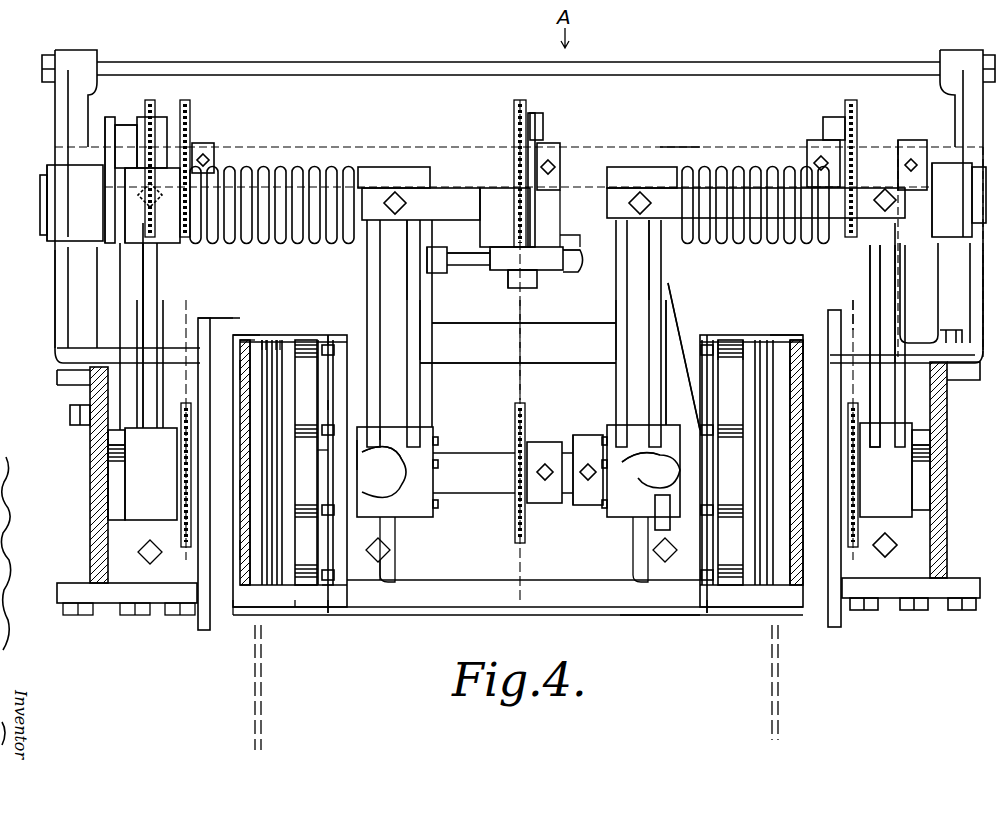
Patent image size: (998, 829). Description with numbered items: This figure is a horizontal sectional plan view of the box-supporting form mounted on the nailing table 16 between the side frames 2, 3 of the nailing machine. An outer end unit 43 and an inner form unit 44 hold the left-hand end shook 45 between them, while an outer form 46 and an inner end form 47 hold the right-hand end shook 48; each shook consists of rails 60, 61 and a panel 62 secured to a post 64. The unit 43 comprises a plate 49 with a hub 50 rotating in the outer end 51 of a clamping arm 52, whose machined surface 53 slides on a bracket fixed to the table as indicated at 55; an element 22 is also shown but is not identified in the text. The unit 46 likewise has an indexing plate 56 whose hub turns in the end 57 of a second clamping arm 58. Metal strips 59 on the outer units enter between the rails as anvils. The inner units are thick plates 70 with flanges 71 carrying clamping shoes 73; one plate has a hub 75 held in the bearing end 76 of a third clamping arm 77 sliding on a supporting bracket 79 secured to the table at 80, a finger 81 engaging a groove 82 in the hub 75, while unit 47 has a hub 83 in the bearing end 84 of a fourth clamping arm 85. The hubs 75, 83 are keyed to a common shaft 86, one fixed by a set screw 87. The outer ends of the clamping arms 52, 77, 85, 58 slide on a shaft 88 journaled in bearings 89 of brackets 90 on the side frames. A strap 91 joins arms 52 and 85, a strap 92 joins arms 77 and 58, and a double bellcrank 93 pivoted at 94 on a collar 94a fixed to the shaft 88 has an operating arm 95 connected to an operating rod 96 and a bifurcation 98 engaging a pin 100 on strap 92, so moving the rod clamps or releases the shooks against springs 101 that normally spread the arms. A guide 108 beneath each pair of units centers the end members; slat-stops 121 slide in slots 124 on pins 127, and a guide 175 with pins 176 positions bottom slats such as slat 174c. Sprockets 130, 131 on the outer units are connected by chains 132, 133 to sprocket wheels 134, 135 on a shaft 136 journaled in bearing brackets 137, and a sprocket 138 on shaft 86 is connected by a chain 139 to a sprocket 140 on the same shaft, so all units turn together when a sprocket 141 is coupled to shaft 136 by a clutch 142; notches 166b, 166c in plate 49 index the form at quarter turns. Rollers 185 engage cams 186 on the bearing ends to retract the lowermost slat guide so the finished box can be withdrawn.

The side frame 2 is at (945, 425).
The side frame 3 is at (90, 525).
The nailing table 16 is at (483, 578).
The base plate 22 is at (112, 603).
The outer end unit 43 is at (222, 332).
The inner form unit 44 is at (332, 330).
The left-hand end shook 45 is at (248, 336).
The outer form 46 is at (814, 335).
The inner end form 47 is at (732, 335).
The right-hand end shook 48 is at (795, 335).
The plate 49 is at (204, 630).
The hub 50 is at (178, 452).
The outer end of clamping arm 51 is at (140, 525).
The clamping arm 52 is at (160, 296).
The machined surface 53 is at (108, 455).
The mounting of bracket on table 55 is at (140, 605).
The indexing plate 56 is at (836, 628).
The end of second clamping arm 57 is at (895, 512).
The second clamping arm 58 is at (885, 300).
The metal strips 59 is at (238, 396).
The end rail 60 is at (266, 320).
The end rail 61 is at (240, 615).
The panel 62 is at (244, 472).
The second post 64 is at (290, 330).
The plate 70 is at (305, 610).
The flange 71 is at (335, 605).
The clamping shoe 73 is at (285, 345).
The hub 75 is at (370, 435).
The bearing end 76 is at (430, 440).
The third clamping arm 77 is at (405, 318).
The supporting bracket 79 is at (422, 338).
The mounting of bracket on table 80 is at (378, 578).
The projecting finger 81 is at (340, 430).
The groove 82 is at (322, 455).
The hub 83 is at (662, 430).
The bearing end 84 is at (618, 522).
The fourth clamping arm 85 is at (664, 292).
The common shaft 86 is at (482, 493).
The set screw 87 is at (588, 460).
The shaft 88 is at (588, 225).
The bearings 89 is at (75, 243).
The brackets 90 is at (55, 292).
The strap 91 is at (265, 238).
The strap 92 is at (770, 218).
The double bellcrank 93 is at (575, 262).
The pivot 94 is at (535, 282).
The collar 94a is at (560, 245).
The operating arm 95 is at (462, 268).
The operating rod 96 is at (432, 273).
The bifurcation 98 is at (490, 275).
The pin 100 is at (515, 288).
The springs 101 is at (292, 168).
The guide 108 is at (264, 686).
The slat-stop 121 is at (405, 383).
The slot 124 is at (340, 605).
The pins 127 is at (405, 400).
The sprocket 130 is at (186, 545).
The sprocket 131 is at (853, 545).
The chain 132 is at (180, 285).
The chain 133 is at (852, 290).
The sprocket wheel 134 is at (192, 103).
The sprocket wheel 135 is at (858, 105).
The shaft 136 is at (667, 147).
The bearing brackets 137 is at (78, 150).
The sprocket 138 is at (526, 415).
The chain 139 is at (522, 345).
The sprocket 140 is at (528, 103).
The sprocket 141 is at (145, 101).
The clutch 142 is at (118, 124).
The notch 166b is at (860, 455).
The notch 166c is at (218, 320).
The slat 174c is at (630, 618).
The guide 175 is at (440, 326).
The pins 176 is at (708, 330).
The roller 185 is at (511, 463).
The cams 186 is at (380, 545).